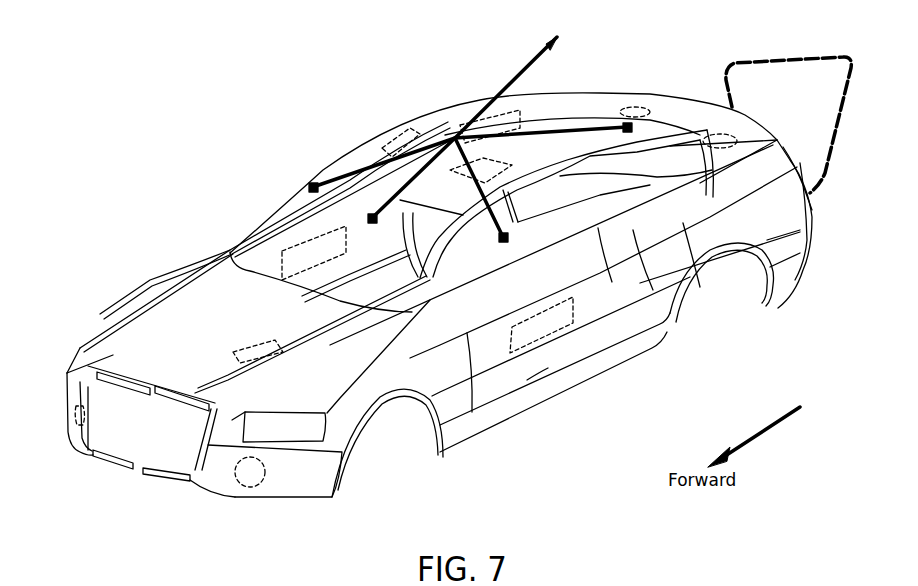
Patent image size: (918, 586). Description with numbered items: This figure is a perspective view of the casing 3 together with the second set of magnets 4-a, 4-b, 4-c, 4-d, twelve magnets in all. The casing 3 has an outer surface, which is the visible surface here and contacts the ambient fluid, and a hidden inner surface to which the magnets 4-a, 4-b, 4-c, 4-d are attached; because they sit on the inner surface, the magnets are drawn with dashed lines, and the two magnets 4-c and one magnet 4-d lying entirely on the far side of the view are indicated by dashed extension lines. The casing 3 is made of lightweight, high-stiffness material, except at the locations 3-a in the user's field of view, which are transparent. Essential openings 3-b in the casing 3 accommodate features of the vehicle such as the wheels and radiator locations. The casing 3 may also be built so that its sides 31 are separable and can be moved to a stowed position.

The casing 3 is at (330, 141).
The transparent locations of casing 3-a is at (470, 133).
The essential openings 3-b is at (140, 420).
The magnet 4-a is at (257, 483).
The magnets 4-b is at (423, 130).
The magnets 4-c is at (797, 114).
The magnet 4-d is at (303, 245).
The casing sides 31 is at (527, 380).